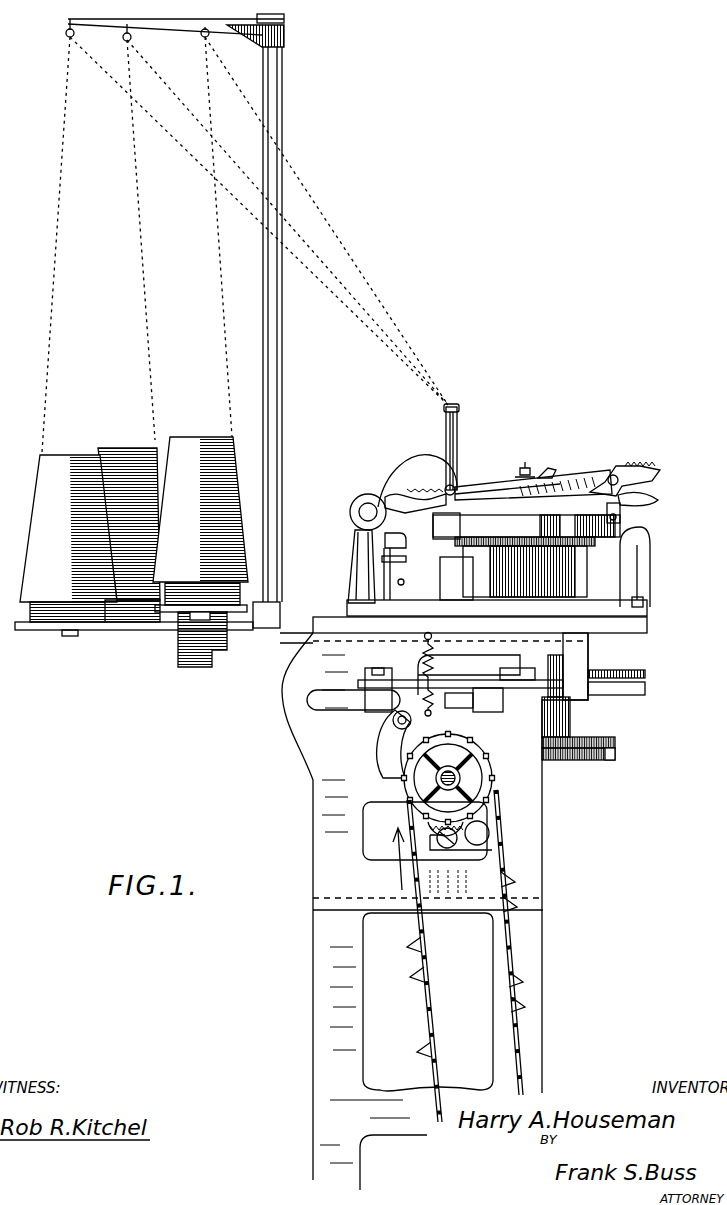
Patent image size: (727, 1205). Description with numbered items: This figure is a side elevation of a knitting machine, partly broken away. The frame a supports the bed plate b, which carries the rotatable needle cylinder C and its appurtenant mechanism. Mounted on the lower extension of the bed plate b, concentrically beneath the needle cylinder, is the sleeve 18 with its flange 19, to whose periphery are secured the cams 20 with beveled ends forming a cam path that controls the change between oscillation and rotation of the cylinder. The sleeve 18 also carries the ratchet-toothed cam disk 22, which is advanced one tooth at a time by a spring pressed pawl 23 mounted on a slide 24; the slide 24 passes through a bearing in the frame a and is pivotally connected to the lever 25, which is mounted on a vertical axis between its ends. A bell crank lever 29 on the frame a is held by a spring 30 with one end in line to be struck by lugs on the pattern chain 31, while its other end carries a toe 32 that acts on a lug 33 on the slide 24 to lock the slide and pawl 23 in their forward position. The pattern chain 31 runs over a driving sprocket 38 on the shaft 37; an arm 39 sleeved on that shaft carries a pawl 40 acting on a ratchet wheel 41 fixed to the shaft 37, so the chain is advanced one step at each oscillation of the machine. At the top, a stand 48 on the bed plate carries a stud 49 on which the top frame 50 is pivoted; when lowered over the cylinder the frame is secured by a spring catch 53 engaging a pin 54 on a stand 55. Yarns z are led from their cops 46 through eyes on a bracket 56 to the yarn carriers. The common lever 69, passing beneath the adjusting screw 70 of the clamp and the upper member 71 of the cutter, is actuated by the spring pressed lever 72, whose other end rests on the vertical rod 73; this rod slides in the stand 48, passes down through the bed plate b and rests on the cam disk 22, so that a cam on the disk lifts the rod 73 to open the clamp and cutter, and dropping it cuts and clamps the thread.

The yarns z is at (345, 287).
The cops 46 is at (112, 450).
The bracket 56 is at (458, 412).
The stud 49 is at (363, 503).
The spring pressed lever 72 is at (417, 487).
The common lever 69 is at (478, 483).
The adjusting screw 70 is at (513, 467).
The upper member of the cutter 71 is at (545, 470).
The top frame 50 is at (586, 487).
The spring catch 53 is at (643, 498).
The pin 54 is at (622, 515).
The vertical rod 73 is at (382, 538).
The stand 48 is at (355, 572).
The needle cylinder C is at (565, 568).
The stand 55 is at (642, 587).
The bed plate b is at (640, 623).
The spring 30 is at (412, 683).
The spring pressed pawl 23 is at (525, 670).
The cam disk 22 is at (637, 673).
The slide 24 is at (637, 695).
The lever 25 is at (375, 700).
The toe 32 is at (462, 702).
The lug 33 is at (500, 704).
The sleeve 18 is at (572, 717).
The bell crank lever 29 is at (383, 755).
The driving sprocket 38 is at (480, 757).
The shaft 37 is at (461, 782).
The cams 20 is at (613, 747).
The flange 19 is at (605, 762).
The ratchet wheel 41 is at (483, 815).
The pawl 40 is at (490, 833).
The arm 39 is at (518, 866).
The frame a is at (312, 862).
The pattern chain 31 is at (510, 938).